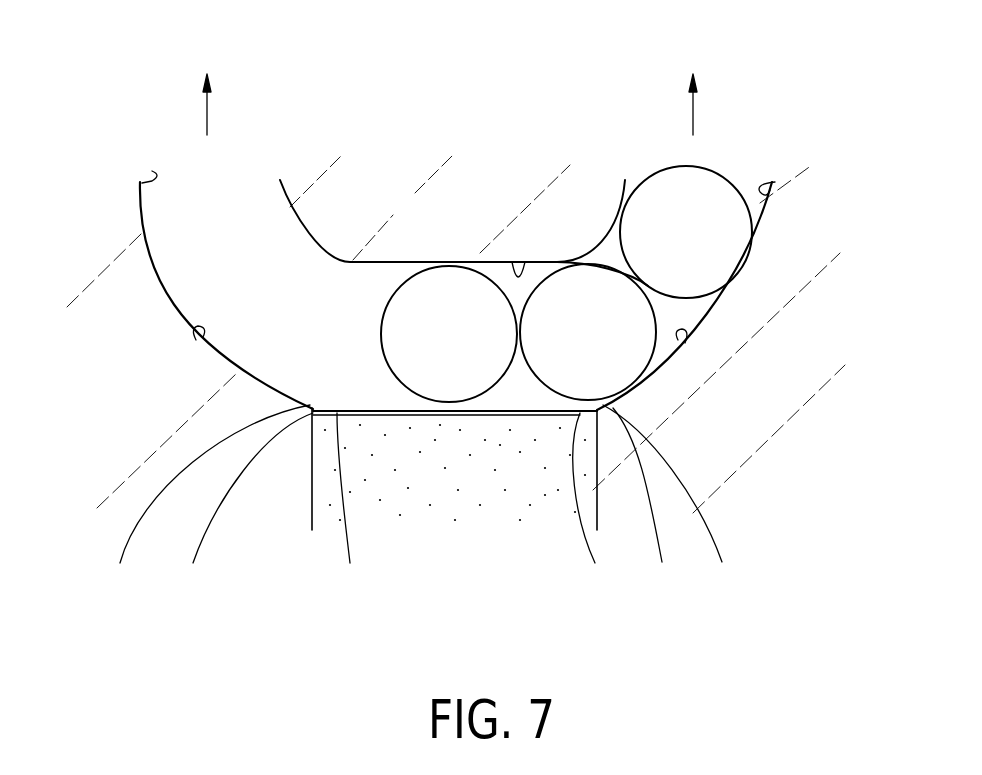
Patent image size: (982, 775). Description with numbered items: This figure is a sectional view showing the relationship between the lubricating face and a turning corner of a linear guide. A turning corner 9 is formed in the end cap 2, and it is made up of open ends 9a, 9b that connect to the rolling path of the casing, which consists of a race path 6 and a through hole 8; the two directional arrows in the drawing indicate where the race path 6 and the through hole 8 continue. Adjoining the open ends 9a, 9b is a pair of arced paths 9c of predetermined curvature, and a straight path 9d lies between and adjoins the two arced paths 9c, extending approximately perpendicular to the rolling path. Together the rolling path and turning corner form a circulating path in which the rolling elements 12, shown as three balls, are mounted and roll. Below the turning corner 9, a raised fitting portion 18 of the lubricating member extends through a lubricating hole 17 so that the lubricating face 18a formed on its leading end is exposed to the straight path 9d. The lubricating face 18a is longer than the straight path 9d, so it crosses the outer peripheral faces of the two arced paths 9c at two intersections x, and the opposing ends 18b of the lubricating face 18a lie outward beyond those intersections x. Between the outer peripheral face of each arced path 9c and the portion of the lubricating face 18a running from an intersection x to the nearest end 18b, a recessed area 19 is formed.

The end cap 2 is at (803, 345).
The race path 6 is at (207, 93).
The through hole 8 is at (693, 93).
The turning corner 9 is at (400, 264).
The open end 9a is at (775, 182).
The open end 9b is at (152, 171).
The arced path 9c is at (196, 340).
The straight path 9d is at (520, 275).
The rolling element 12 is at (458, 288).
The lubricating hole 17 is at (312, 505).
The raised fitting portion 18 is at (528, 477).
The lubricating face 18a is at (378, 411).
The end of lubricating face 18b is at (426, 502).
The recessed area 19 is at (420, 499).
The intersection x is at (469, 503).